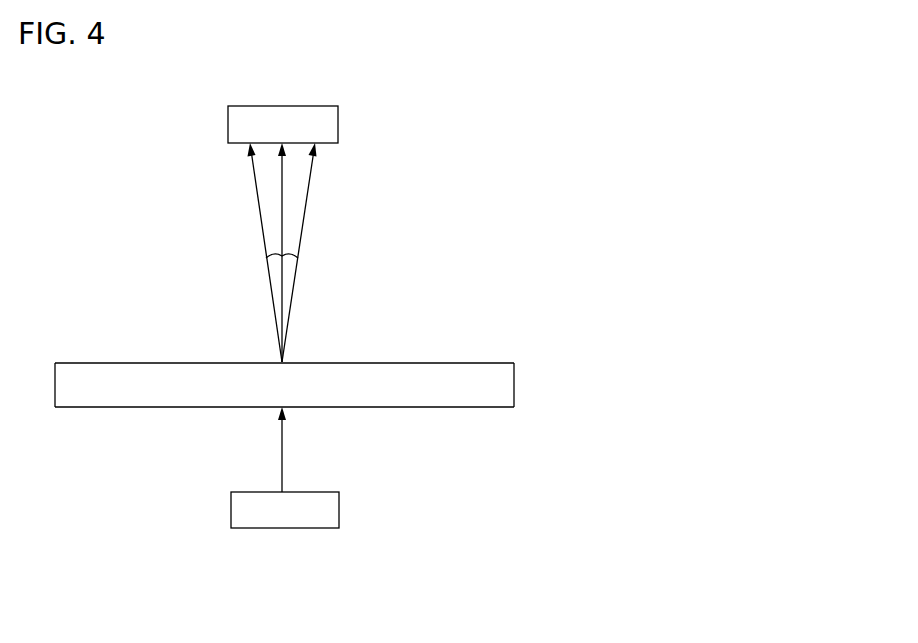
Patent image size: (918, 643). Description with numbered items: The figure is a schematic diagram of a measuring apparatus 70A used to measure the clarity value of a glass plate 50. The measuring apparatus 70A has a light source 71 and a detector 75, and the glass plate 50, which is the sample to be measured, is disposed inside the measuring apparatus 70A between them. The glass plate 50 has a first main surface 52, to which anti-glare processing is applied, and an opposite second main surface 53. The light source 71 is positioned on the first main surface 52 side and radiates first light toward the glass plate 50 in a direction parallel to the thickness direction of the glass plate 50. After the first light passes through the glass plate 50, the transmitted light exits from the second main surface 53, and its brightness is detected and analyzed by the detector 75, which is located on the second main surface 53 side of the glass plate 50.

The measuring apparatus 70A is at (522, 122).
The detector 75 is at (326, 122).
The glass plate 50 is at (318, 361).
The second main surface 53 is at (478, 362).
The first main surface 52 is at (492, 404).
The light source 71 is at (327, 513).